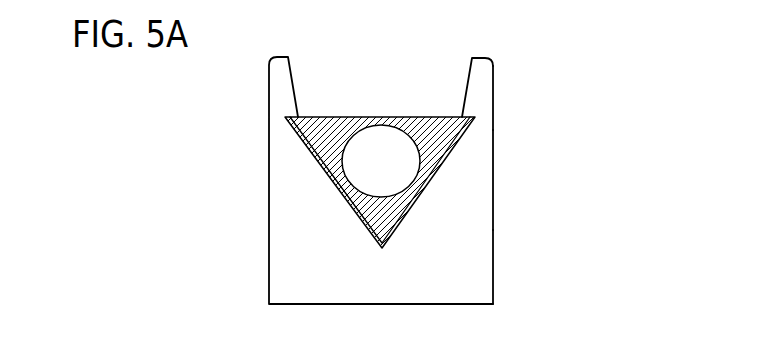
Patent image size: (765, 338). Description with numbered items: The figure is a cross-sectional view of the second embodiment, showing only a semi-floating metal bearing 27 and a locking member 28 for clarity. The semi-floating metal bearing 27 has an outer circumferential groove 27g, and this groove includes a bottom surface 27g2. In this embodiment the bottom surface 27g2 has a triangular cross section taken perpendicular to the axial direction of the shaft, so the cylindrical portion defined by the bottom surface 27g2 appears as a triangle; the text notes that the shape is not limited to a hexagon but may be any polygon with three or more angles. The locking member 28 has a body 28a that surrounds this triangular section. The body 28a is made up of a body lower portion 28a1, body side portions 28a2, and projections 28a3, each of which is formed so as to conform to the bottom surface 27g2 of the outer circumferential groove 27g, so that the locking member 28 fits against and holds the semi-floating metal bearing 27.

The semi-floating metal bearing 27 is at (331, 130).
The outer circumferential groove 27g is at (395, 105).
The bottom surface 27g2 is at (368, 116).
The locking member 28 is at (469, 180).
The body 28a is at (579, 185).
The body lower portion 28a1 is at (494, 272).
The body side portions 28a2 is at (494, 195).
The projections 28a3 is at (494, 93).